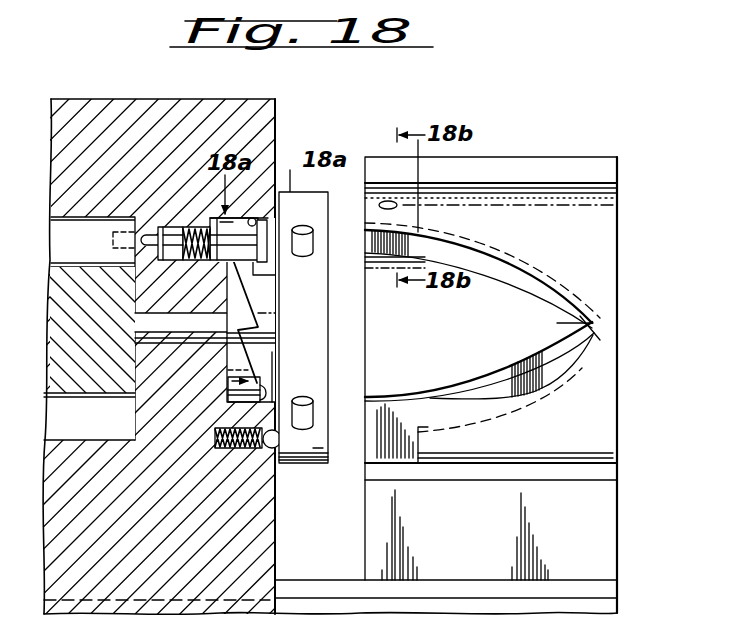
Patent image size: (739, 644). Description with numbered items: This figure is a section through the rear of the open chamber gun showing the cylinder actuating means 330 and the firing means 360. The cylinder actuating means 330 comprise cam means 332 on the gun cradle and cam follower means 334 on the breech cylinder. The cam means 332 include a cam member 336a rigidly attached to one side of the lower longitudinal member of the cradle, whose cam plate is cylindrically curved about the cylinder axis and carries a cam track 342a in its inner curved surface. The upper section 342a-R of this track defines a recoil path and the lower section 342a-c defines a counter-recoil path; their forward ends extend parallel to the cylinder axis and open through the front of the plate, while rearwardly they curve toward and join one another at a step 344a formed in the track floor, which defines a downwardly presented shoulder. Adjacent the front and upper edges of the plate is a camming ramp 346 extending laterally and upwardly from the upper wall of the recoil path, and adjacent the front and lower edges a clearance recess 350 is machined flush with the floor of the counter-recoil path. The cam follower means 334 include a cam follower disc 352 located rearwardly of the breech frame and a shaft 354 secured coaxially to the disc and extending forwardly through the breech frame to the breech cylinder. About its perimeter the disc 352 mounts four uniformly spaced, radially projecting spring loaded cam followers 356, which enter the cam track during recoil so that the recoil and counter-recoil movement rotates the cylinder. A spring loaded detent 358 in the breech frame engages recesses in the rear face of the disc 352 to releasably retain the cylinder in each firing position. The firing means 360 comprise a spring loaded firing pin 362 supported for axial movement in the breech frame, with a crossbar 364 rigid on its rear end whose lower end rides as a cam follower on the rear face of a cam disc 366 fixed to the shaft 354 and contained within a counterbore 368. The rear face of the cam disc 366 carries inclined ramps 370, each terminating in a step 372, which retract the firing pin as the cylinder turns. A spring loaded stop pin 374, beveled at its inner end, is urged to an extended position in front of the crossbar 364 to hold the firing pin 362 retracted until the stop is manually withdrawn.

The cylinder actuating means 330 is at (536, 157).
The cam means 332 is at (618, 318).
The cam follower means 334 is at (329, 191).
The cam member 336a is at (589, 408).
The cam track 342a is at (539, 281).
The upper section of cam track (recoil path) 342a-R is at (490, 265).
The lower section of cam track (counter-recoil path) 342a-c is at (504, 390).
The step 344a is at (594, 332).
The camming ramp 346 is at (404, 222).
The clearance recess 350 is at (398, 455).
The cam follower disc 352 is at (329, 464).
The shaft 354 is at (240, 386).
The cam followers 356 is at (313, 255).
The spring loaded detent 358 is at (264, 451).
The firing means 360 is at (249, 190).
The firing pin 362 is at (165, 235).
The crossbar 364 is at (266, 256).
The cam disc 366 is at (262, 396).
The counterbore 368 is at (215, 434).
The inclined ramps 370 is at (242, 305).
The shoulder or step 372 is at (257, 344).
The stop pin 374 is at (254, 218).